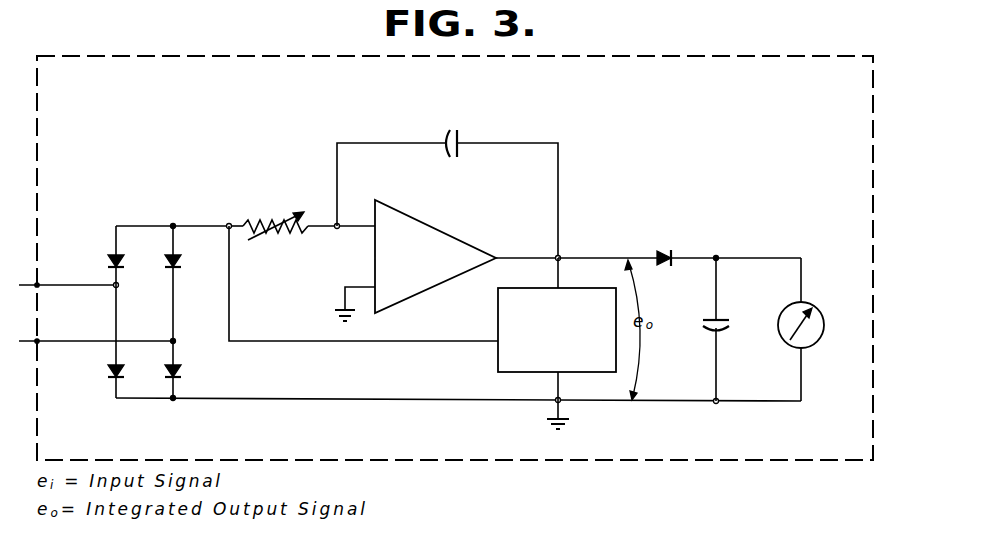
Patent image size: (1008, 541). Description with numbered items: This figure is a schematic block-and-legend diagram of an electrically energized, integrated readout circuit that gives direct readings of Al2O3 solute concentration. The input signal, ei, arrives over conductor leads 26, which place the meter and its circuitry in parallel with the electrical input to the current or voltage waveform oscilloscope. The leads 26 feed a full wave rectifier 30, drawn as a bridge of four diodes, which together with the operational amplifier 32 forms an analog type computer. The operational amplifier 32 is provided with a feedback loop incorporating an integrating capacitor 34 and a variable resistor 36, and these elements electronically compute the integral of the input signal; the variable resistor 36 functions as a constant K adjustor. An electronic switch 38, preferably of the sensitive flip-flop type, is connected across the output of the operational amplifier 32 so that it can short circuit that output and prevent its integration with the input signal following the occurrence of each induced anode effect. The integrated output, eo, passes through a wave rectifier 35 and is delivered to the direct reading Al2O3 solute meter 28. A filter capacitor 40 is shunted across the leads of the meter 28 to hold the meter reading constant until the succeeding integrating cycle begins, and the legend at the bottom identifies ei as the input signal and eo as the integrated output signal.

The conductor leads 26 is at (62, 286).
The full wave rectifier 30 is at (138, 241).
The variable resistor 36 is at (280, 245).
The operational amplifier 32 is at (424, 304).
The integrating capacitor 34 is at (485, 128).
The electronic switch 38 is at (570, 364).
The wave rectifier 35 is at (683, 242).
The filter capacitor 40 is at (708, 319).
The Al2O3 solute meter 28 is at (834, 343).